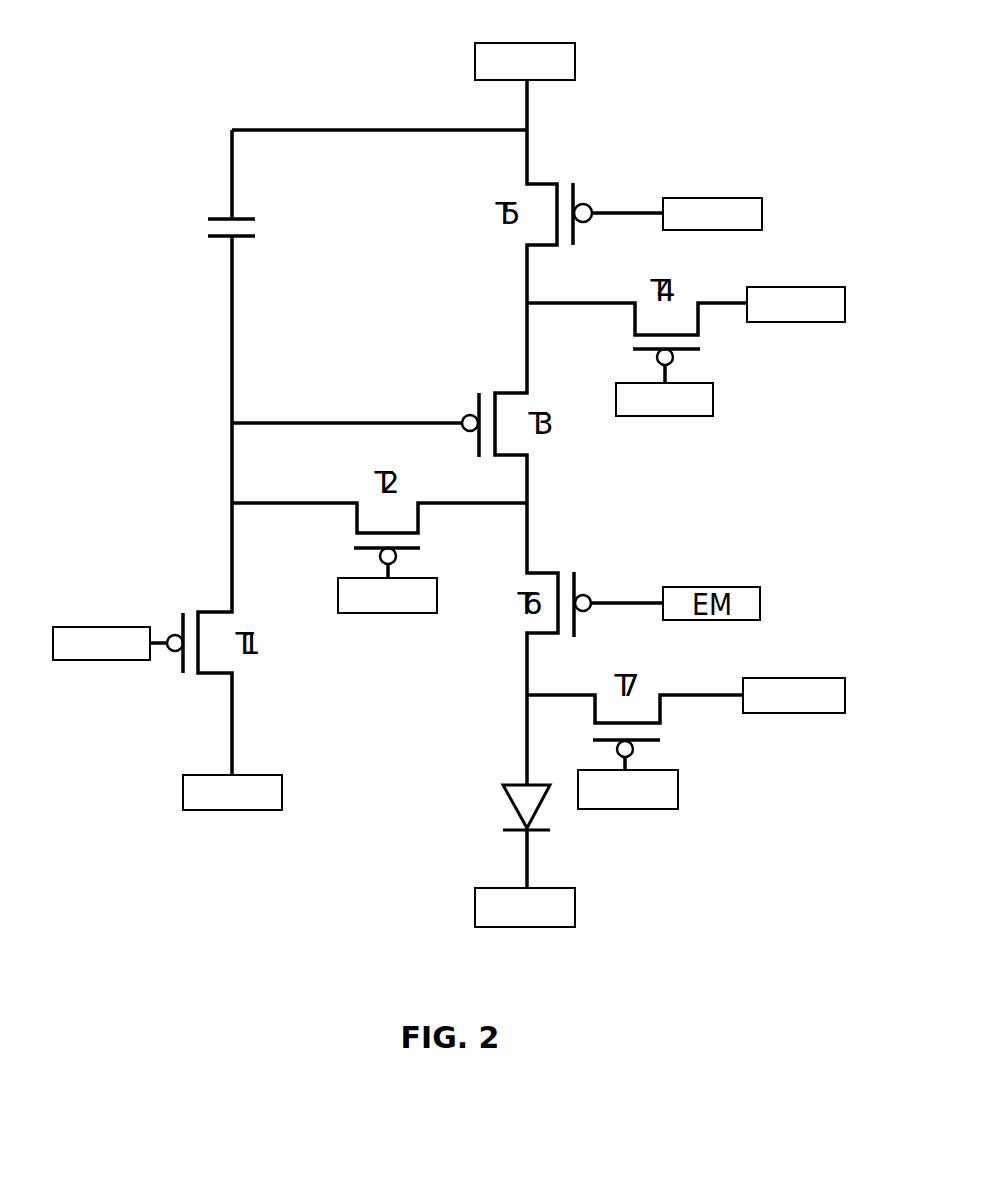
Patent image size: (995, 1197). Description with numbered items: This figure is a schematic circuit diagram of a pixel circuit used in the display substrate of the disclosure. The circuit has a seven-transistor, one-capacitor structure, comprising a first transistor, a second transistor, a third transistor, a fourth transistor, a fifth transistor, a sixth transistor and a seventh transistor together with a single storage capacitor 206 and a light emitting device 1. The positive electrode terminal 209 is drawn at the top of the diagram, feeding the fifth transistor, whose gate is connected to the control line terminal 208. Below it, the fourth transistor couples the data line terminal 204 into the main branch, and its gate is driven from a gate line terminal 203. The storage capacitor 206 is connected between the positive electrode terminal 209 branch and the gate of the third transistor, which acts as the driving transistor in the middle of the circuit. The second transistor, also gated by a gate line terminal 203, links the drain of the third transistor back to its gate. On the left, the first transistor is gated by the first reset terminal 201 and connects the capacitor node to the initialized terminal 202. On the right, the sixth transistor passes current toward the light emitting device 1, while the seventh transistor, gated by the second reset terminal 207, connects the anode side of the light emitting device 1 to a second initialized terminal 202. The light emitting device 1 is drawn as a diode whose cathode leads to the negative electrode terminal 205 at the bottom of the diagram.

The light emitting device 1 is at (510, 808).
The first reset terminal 201 is at (97, 662).
The initialized terminal 202 is at (181, 792).
The gate line terminal 203 is at (714, 397).
The data line terminal 204 is at (797, 324).
The negative electrode terminal 205 is at (577, 905).
The storage capacitor 206 is at (208, 230).
The second reset terminal 207 is at (680, 793).
The control line terminal 208 is at (713, 197).
The positive electrode terminal 209 is at (577, 60).